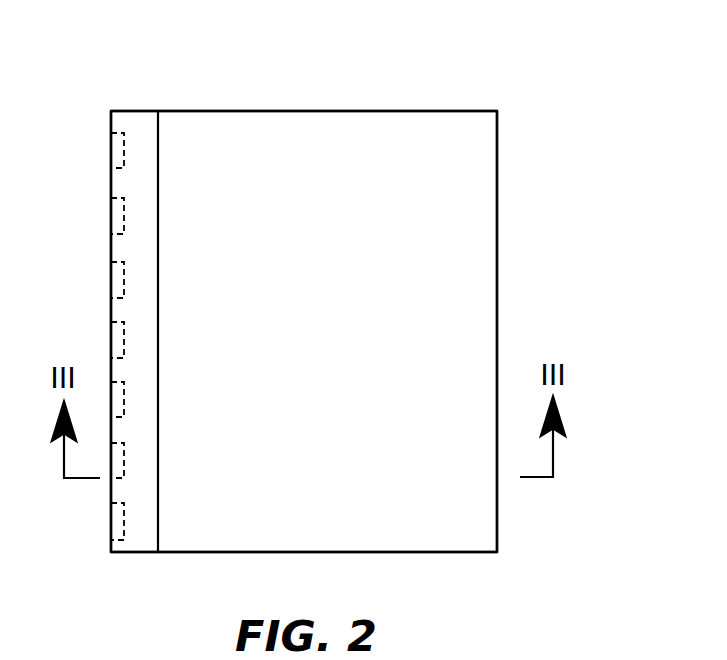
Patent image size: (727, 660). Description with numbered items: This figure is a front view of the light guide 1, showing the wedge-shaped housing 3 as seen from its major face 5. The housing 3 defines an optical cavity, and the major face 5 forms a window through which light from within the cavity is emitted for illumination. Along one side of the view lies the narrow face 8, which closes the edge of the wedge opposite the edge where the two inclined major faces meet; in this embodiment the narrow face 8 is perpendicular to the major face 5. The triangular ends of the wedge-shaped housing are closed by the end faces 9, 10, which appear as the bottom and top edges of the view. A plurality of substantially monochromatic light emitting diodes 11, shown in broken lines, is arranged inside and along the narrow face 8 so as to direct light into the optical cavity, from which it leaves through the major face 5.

The light guide 1 is at (537, 269).
The wedge-shaped housing 3 is at (485, 179).
The major face 5 is at (292, 326).
The narrow face 8 is at (108, 311).
The end face 9 is at (433, 556).
The end face 10 is at (391, 106).
The light emitting diodes 11 is at (110, 153).